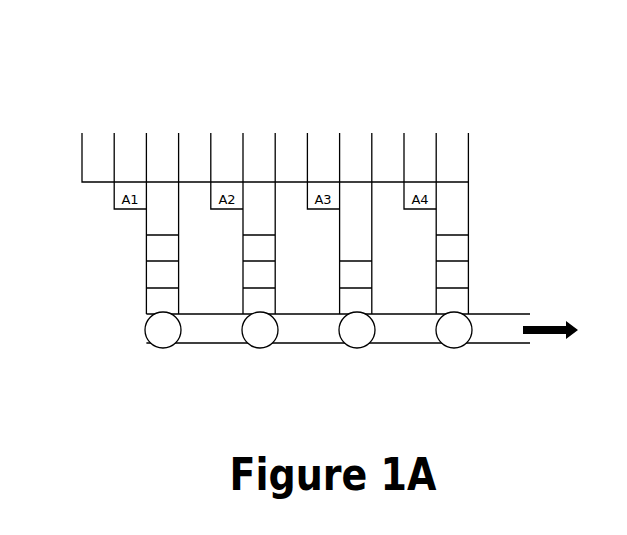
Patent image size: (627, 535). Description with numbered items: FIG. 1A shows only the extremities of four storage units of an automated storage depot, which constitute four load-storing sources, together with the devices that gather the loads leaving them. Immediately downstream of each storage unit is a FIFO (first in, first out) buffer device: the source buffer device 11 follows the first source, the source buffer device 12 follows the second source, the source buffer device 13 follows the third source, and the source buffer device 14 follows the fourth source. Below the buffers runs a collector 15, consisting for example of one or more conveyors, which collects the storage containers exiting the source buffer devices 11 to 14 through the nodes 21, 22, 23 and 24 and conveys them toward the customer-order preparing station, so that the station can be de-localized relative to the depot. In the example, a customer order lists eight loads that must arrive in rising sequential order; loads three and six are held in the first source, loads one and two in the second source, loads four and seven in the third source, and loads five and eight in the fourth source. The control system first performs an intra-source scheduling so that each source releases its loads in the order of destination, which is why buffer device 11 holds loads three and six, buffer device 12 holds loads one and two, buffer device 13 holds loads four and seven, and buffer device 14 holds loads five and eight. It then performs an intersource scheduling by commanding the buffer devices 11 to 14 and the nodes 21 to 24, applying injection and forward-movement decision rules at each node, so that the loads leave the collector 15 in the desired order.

The source buffer device 11 is at (162, 210).
The source buffer device 12 is at (263, 210).
The source buffer device 13 is at (360, 210).
The source buffer device 14 is at (452, 210).
The collector 15 is at (500, 327).
The node 21 is at (162, 348).
The node 22 is at (262, 348).
The node 23 is at (360, 348).
The node 24 is at (455, 346).